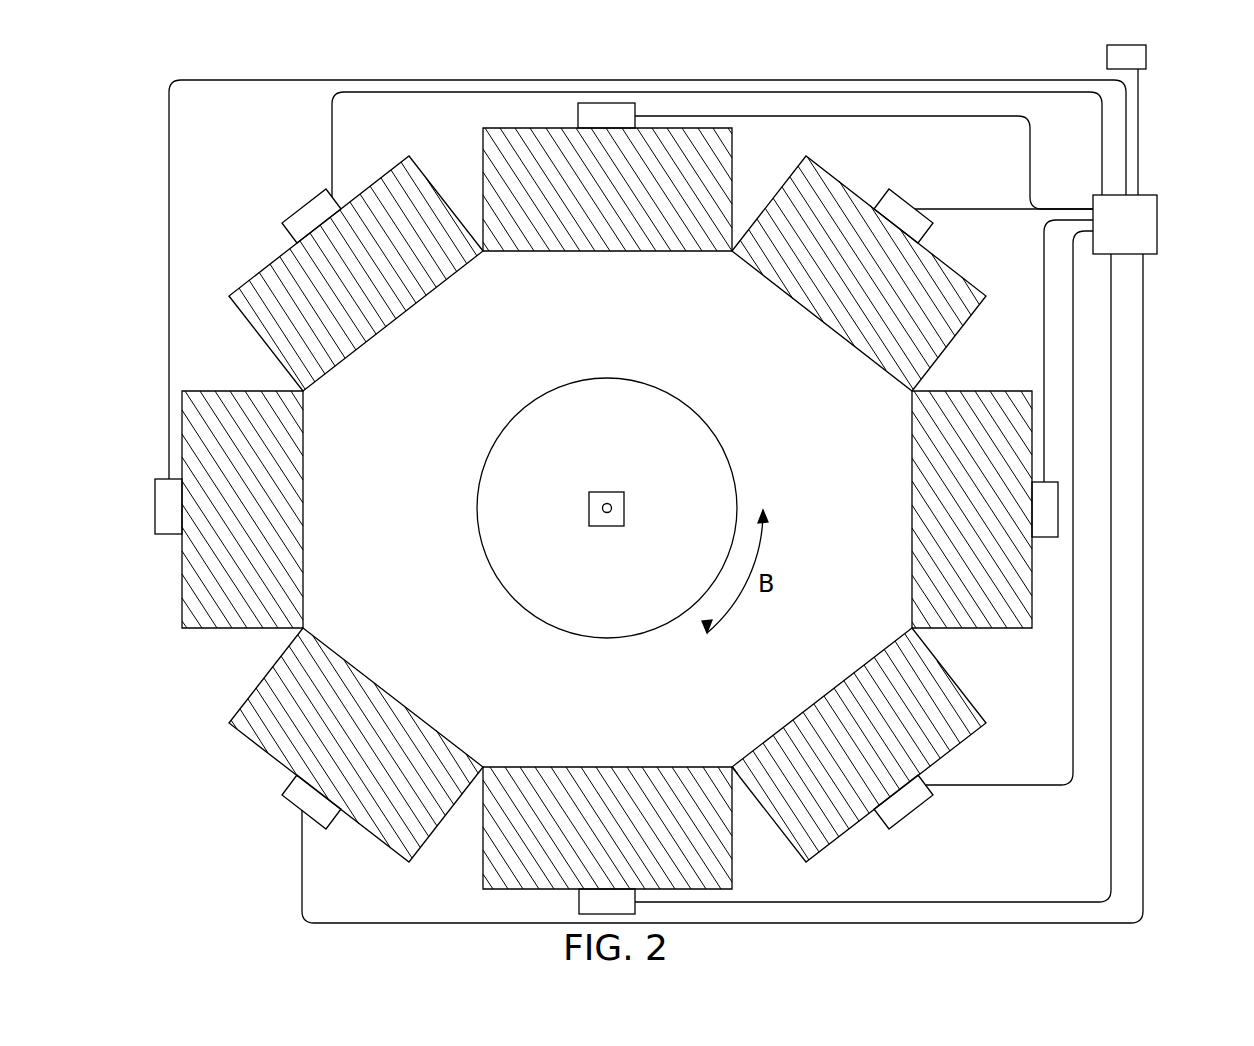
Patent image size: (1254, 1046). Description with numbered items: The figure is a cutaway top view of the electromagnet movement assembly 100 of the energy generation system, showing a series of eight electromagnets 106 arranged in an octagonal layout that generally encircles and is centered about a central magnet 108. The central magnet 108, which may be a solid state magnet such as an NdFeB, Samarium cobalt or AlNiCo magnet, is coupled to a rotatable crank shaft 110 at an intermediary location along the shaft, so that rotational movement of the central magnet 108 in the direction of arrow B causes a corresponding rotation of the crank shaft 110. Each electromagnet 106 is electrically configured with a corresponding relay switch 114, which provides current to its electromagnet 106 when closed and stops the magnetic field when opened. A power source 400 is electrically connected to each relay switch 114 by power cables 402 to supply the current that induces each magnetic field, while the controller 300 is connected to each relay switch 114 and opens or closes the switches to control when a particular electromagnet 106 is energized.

The electromagnet movement assembly 100 is at (130, 98).
The electromagnet 106 is at (668, 252).
The central magnet 108 is at (610, 377).
The crank shaft 110 is at (607, 491).
The relay switch 114 is at (607, 101).
The controller 300 is at (1106, 57).
The power source 400 is at (1159, 226).
The power cable 402 is at (730, 116).